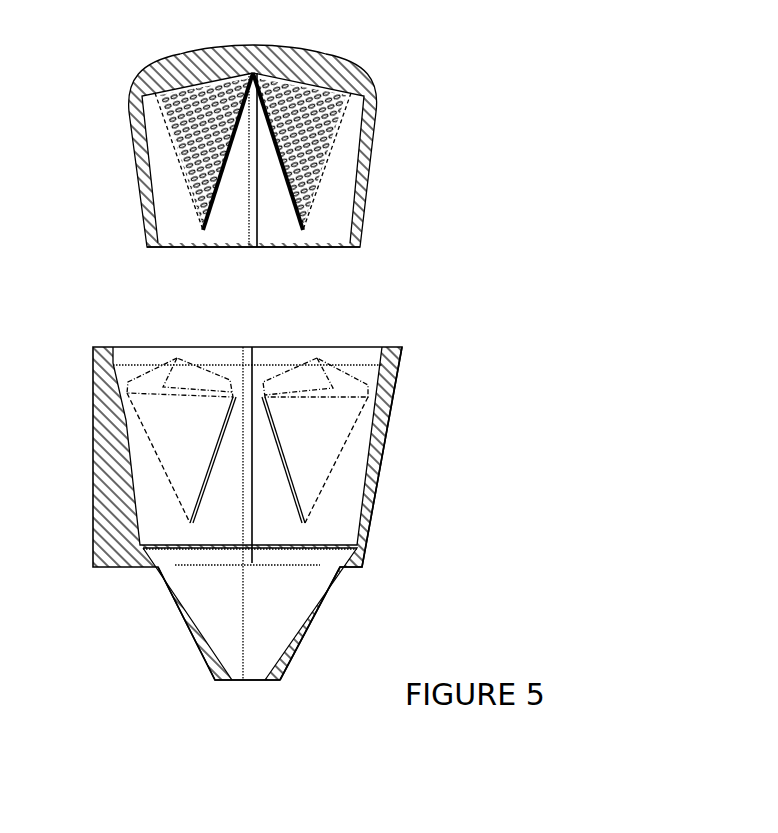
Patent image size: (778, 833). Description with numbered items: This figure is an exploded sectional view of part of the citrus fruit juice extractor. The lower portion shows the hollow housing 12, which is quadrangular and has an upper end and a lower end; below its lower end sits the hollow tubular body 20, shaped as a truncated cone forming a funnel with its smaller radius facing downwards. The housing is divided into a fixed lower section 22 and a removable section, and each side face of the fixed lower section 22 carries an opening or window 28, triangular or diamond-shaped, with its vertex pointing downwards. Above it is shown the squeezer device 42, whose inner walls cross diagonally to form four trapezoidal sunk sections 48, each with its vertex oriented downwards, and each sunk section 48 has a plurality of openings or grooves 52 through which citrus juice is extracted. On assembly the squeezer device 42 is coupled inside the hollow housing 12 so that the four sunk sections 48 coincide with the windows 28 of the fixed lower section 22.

The hollow housing 12 is at (404, 439).
The hollow tubular body 20 is at (190, 627).
The fixed lower section 22 is at (390, 391).
The opening or window 28 is at (175, 440).
The squeezer device 42 is at (378, 178).
The trapezoidal sunk sections 48 is at (185, 136).
The openings or grooves 52 is at (205, 164).